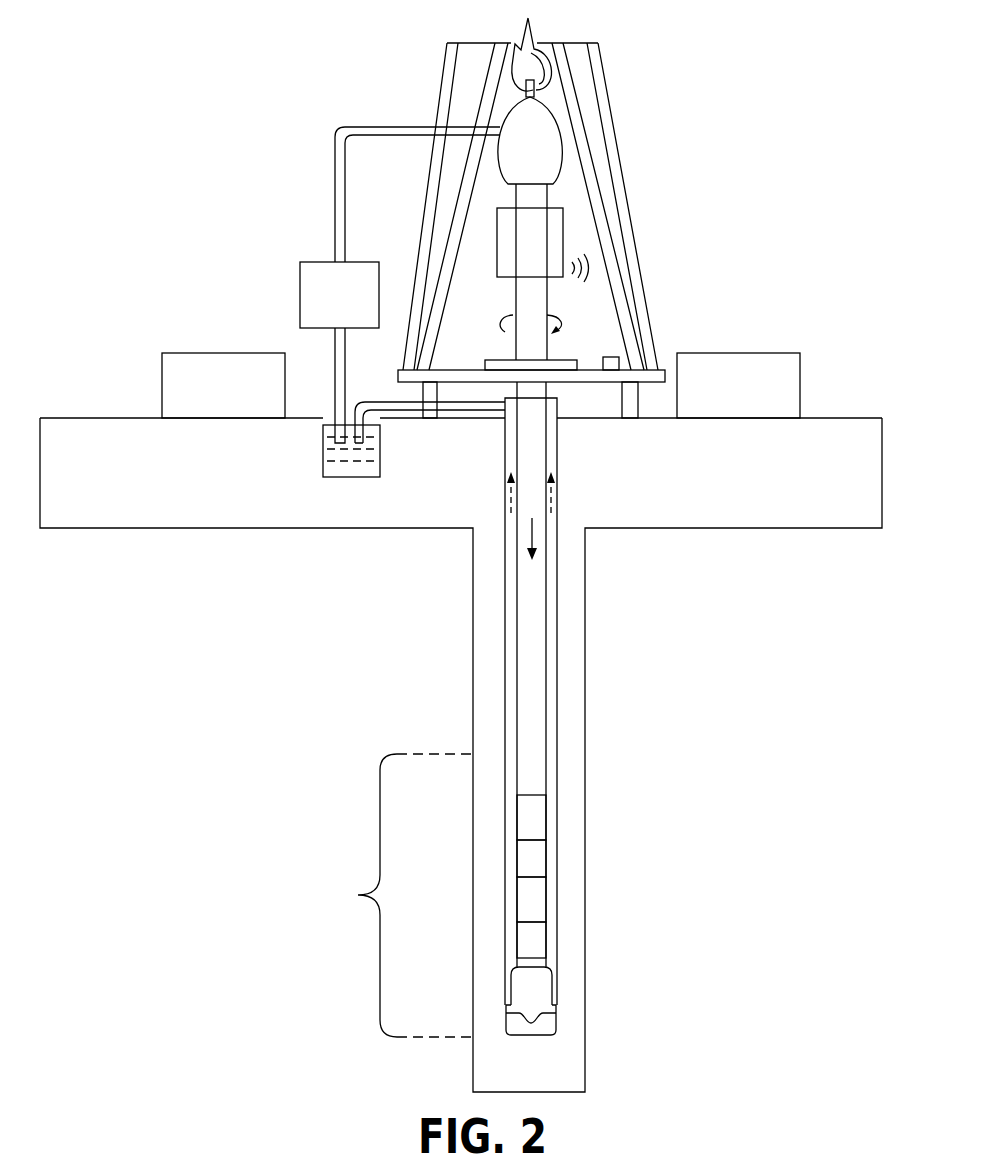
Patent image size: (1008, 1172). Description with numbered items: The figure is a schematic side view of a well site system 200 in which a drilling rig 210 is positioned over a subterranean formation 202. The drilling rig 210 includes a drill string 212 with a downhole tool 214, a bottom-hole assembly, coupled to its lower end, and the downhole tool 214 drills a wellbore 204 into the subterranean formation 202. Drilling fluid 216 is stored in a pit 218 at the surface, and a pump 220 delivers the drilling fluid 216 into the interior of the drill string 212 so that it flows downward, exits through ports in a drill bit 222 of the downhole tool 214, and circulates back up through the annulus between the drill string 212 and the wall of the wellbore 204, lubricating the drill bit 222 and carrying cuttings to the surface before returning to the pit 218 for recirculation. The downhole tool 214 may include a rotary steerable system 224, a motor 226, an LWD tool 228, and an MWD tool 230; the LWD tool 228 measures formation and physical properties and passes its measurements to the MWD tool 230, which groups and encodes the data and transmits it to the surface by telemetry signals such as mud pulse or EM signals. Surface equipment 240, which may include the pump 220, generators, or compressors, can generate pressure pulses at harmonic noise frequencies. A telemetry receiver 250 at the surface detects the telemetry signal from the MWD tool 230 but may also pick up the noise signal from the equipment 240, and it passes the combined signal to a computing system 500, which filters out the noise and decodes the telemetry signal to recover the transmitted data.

The well site system 200 is at (178, 57).
The subterranean formation 202 is at (256, 502).
The wellbore 204 is at (552, 410).
The drilling rig 210 is at (646, 130).
The drill string 212 is at (517, 580).
The downhole tool 214 is at (439, 895).
The drilling fluid 216 is at (326, 412).
The pit 218 is at (350, 477).
The pump 220 is at (322, 262).
The drill bit 222 is at (510, 990).
The rotary steerable system 224 is at (533, 942).
The motor 226 is at (533, 895).
The LWD tool 228 is at (533, 860).
The MWD tool 230 is at (533, 813).
The equipment 240 is at (220, 353).
The telemetry receiver 250 is at (615, 357).
The computing system 500 is at (737, 353).